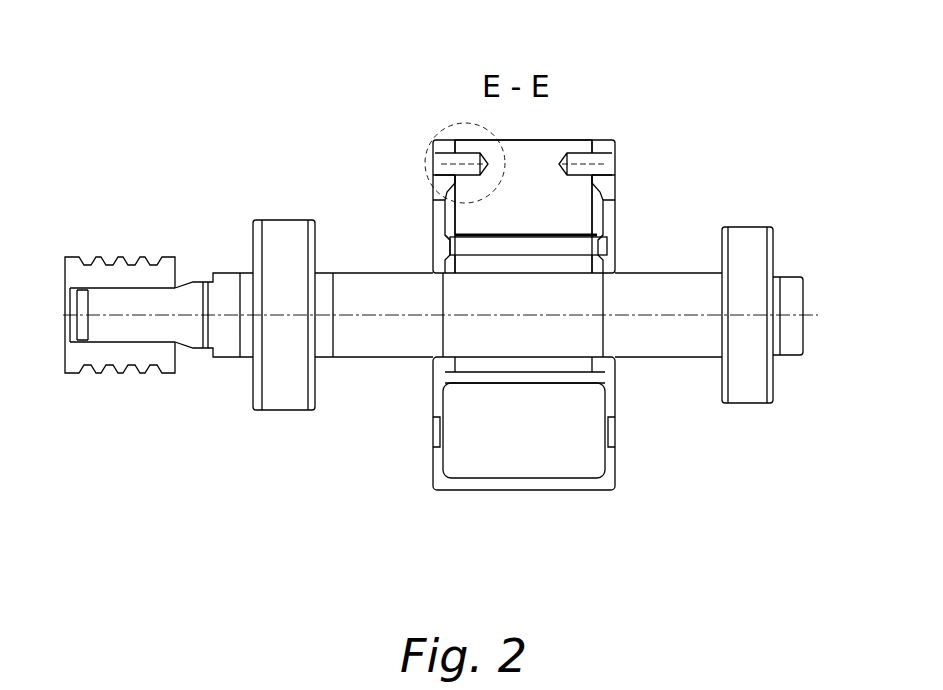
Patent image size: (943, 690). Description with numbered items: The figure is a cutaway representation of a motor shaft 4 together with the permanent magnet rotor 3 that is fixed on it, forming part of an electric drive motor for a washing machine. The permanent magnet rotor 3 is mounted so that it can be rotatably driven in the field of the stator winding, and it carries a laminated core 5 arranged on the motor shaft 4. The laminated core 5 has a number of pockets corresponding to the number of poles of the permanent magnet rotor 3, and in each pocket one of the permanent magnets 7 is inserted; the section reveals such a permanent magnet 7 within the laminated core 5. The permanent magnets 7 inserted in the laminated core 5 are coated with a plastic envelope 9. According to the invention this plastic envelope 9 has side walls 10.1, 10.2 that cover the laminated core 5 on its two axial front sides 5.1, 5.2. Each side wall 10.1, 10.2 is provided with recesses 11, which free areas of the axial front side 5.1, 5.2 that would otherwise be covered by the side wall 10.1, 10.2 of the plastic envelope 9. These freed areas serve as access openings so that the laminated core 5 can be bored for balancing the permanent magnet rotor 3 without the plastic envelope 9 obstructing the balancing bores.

The permanent magnet rotor 3 is at (445, 490).
The motor shaft 4 is at (223, 327).
The laminated core 5 is at (540, 157).
The first axial front side 5.1 is at (450, 226).
The second axial front side 5.2 is at (590, 220).
The permanent magnet 7 is at (557, 445).
The plastic envelope 9 is at (603, 241).
The first side wall 10.1 is at (438, 183).
The second side wall 10.2 is at (603, 185).
The recess 11 is at (443, 163).